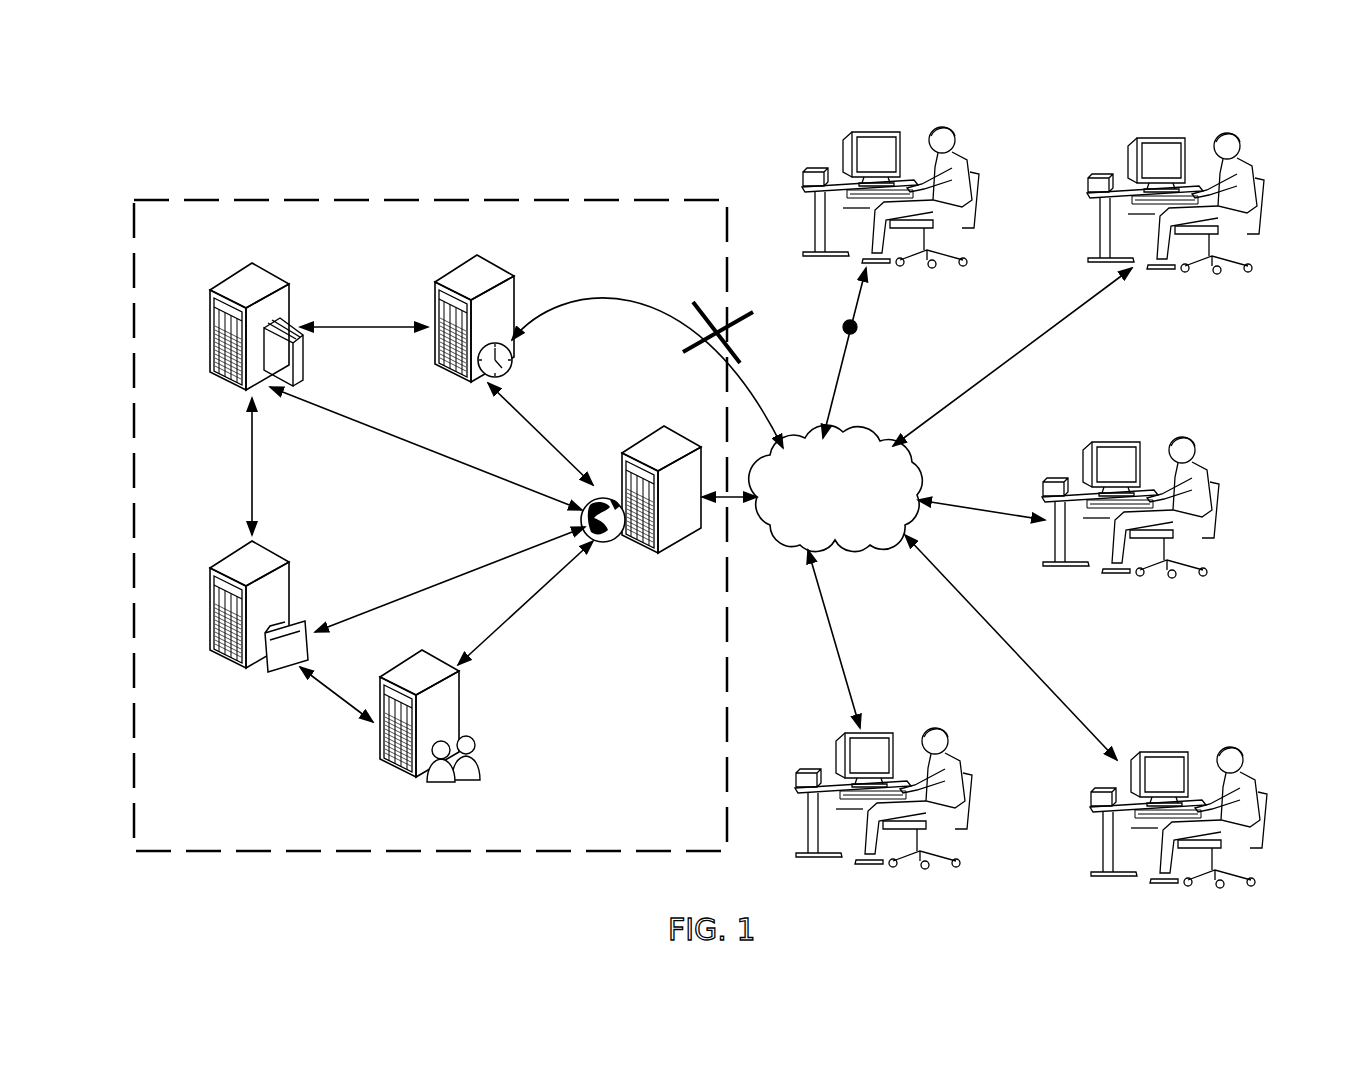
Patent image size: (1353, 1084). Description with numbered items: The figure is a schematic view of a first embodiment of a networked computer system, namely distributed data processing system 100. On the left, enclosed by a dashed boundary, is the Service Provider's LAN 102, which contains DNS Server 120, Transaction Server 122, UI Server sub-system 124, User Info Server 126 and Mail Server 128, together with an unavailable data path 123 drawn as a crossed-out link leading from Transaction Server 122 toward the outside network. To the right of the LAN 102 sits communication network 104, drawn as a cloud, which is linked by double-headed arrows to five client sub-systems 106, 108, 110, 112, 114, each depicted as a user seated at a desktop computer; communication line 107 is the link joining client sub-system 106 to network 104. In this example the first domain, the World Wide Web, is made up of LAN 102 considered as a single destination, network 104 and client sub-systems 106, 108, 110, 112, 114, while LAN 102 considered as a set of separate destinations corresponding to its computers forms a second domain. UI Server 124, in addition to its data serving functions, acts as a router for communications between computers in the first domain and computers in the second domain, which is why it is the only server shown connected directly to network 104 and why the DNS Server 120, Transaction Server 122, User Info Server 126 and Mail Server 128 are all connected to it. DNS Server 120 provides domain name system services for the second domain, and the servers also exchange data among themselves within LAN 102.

The distributed data processing system 100 is at (238, 136).
The Service Provider's LAN 102 is at (505, 200).
The communication network 104 is at (818, 497).
The client sub-system 106 is at (943, 130).
The communication line 107 is at (844, 321).
The client sub-system 108 is at (1240, 143).
The client sub-system 110 is at (1185, 443).
The client sub-system 112 is at (1228, 756).
The client sub-system 114 is at (939, 736).
The DNS Server 120 is at (236, 284).
The Transaction Server 122 is at (498, 273).
The unavailable data path 123 is at (690, 349).
The UI Server sub-system 124 is at (645, 449).
The User Info Server 126 is at (460, 708).
The Mail Server 128 is at (270, 558).